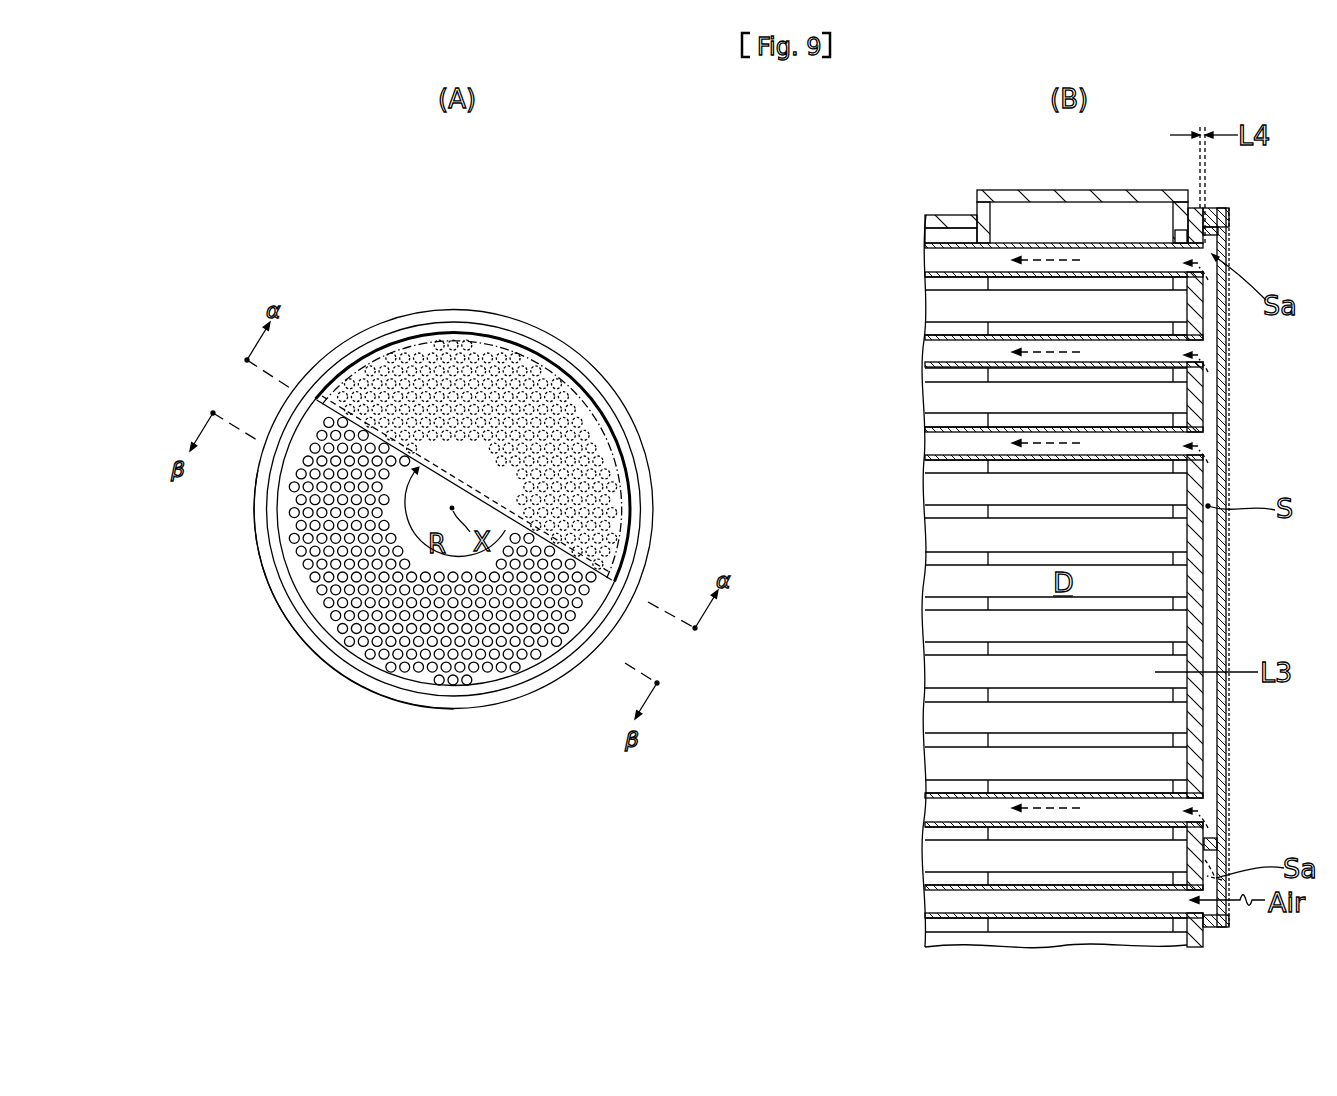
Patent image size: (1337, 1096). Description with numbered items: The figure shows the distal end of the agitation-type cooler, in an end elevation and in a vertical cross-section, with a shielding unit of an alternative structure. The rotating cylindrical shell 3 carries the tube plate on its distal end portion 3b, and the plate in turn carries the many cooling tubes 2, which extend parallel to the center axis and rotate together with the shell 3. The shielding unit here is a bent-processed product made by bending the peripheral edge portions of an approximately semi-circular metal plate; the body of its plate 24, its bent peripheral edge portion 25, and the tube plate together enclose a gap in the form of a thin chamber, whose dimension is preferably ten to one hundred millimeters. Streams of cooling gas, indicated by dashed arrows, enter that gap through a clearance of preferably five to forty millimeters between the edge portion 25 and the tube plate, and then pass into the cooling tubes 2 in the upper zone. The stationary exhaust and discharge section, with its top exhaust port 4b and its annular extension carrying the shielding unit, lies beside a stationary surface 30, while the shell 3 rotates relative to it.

The cooling tube 2 is at (1012, 463).
The cylindrical shell 3 is at (935, 217).
The distal end portion 3b is at (1173, 224).
The exhaust port 4b is at (540, 347).
The plate 24 is at (1229, 600).
The peripheral edge portion 25 is at (1212, 232).
The stationary surface 30 is at (1216, 540).